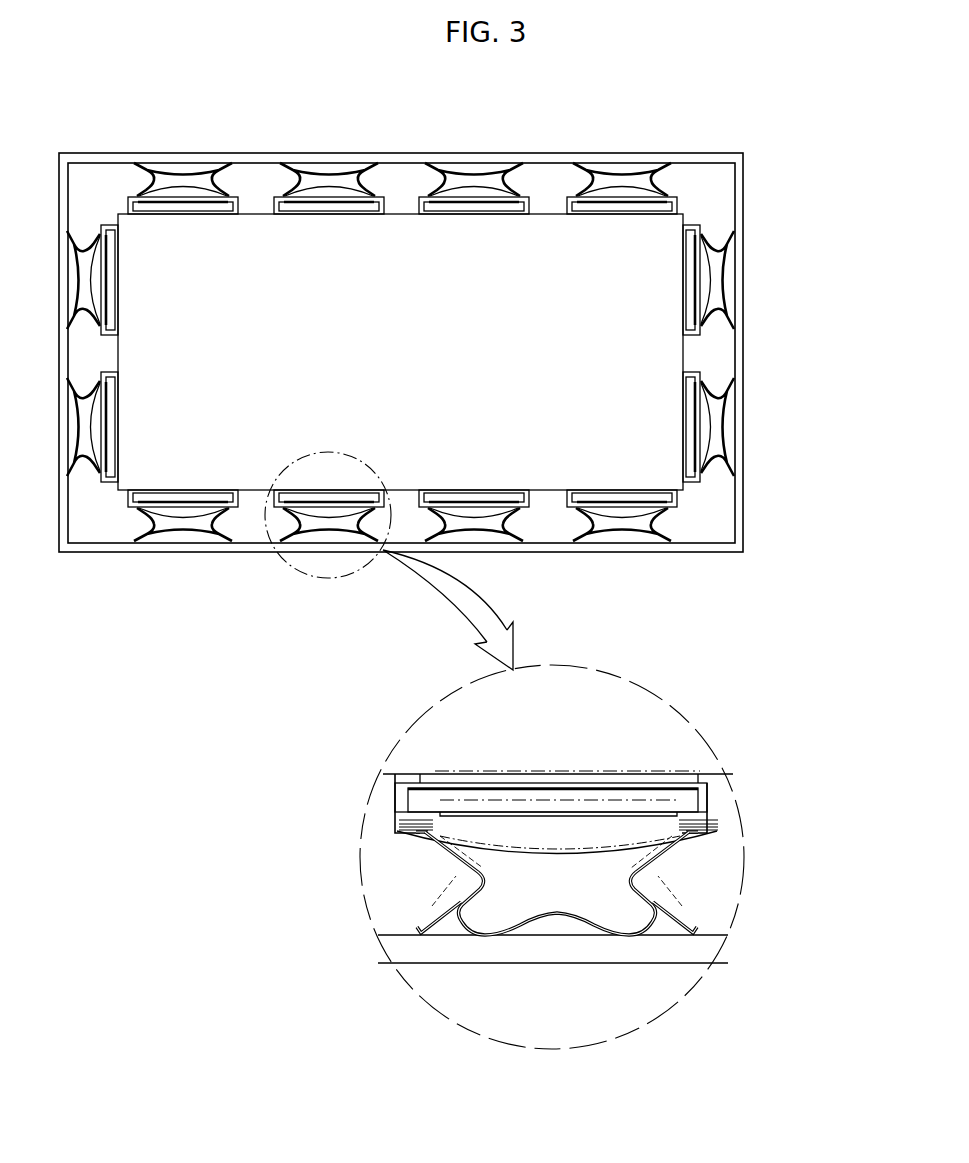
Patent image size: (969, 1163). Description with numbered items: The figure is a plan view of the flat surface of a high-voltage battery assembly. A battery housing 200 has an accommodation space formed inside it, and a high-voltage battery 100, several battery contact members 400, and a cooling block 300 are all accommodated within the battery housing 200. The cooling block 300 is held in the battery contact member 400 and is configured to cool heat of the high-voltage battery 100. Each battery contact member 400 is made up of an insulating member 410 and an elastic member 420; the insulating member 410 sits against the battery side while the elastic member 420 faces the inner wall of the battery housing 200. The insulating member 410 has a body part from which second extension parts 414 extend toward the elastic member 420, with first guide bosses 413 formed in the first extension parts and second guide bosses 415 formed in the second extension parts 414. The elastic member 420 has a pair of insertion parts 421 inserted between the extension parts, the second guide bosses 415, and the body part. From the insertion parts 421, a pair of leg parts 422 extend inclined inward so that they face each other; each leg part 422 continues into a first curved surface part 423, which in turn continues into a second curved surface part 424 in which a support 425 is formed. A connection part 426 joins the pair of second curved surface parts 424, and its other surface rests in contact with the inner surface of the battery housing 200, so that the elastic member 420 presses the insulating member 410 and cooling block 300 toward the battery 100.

The high-voltage battery 100 is at (650, 724).
The battery housing 200 is at (715, 140).
The cooling block 300 is at (446, 784).
The battery contact member 400 is at (838, 468).
The insulating member 410 is at (694, 481).
The first guide bosses 413 is at (706, 776).
The second extension parts 414 is at (719, 822).
The second guide bosses 415 is at (720, 832).
The elastic member 420 is at (737, 462).
The insertion part 421 is at (405, 836).
The leg part 422 is at (455, 866).
The first curved surface part 423 is at (472, 880).
The second curved surface part 424 is at (450, 896).
The support 425 is at (690, 912).
The connection part 426 is at (540, 920).